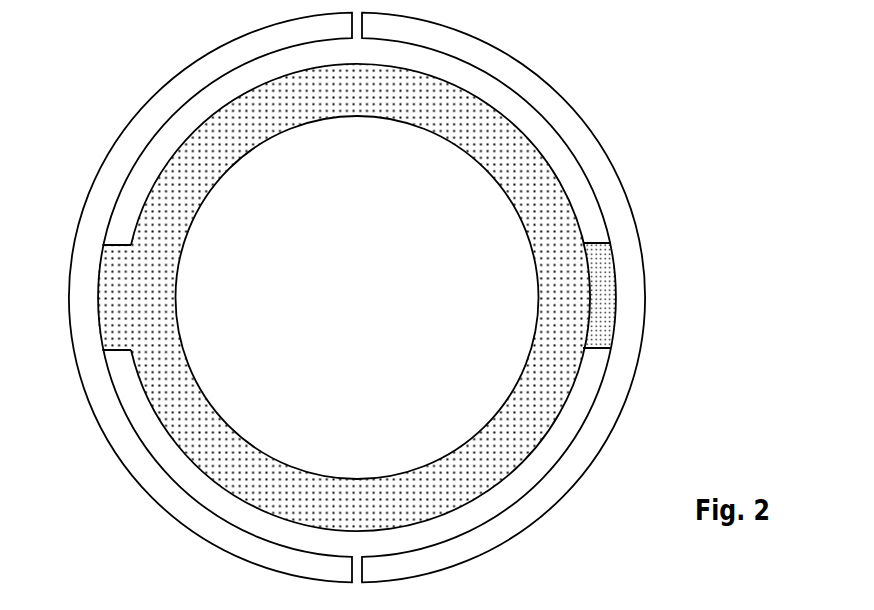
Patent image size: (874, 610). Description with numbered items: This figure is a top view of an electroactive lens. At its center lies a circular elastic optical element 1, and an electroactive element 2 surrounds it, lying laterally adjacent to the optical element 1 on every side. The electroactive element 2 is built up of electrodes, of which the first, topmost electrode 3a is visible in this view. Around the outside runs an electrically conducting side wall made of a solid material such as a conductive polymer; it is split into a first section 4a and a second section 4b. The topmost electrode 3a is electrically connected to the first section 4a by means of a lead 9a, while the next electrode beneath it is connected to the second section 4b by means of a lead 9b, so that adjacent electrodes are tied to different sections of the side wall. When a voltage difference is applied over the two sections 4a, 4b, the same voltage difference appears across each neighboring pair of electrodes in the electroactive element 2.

The elastic optical element 1 is at (273, 180).
The electroactive element 2 is at (355, 298).
The first, topmost electrode 3a is at (153, 223).
The first section of side wall 4a is at (122, 128).
The second section of side wall 4b is at (583, 130).
The lead 9a is at (107, 296).
The lead 9b is at (605, 295).